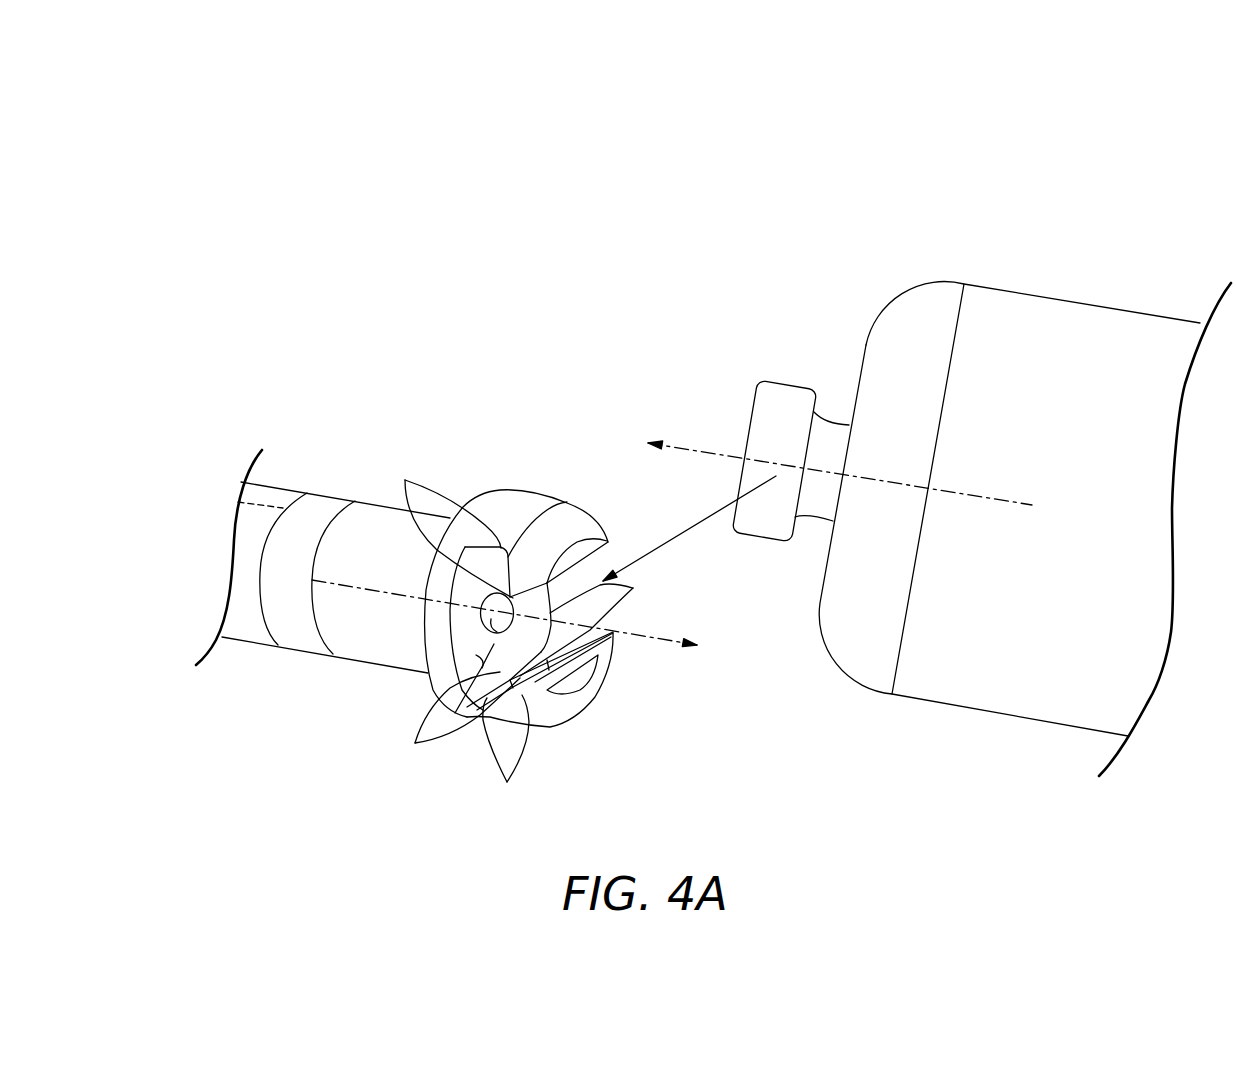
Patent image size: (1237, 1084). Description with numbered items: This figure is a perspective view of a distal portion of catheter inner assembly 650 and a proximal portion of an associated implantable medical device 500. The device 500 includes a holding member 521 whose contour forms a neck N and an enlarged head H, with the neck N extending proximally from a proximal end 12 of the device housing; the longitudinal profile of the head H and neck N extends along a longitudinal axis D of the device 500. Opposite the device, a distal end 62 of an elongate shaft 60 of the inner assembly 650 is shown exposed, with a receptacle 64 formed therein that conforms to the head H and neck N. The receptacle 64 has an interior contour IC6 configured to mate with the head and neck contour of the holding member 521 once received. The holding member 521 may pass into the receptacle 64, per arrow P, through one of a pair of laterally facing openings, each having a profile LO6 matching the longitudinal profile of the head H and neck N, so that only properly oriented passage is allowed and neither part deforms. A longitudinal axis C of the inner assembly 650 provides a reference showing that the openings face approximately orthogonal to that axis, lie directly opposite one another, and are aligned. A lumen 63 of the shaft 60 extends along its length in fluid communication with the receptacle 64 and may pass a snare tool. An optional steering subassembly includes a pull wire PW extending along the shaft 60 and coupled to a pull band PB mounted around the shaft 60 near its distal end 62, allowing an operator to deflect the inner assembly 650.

The implantable medical device 500 is at (970, 150).
The proximal end of device housing 12 is at (897, 360).
The holding member 521 is at (767, 443).
The enlarged head H is at (795, 400).
The neck N is at (817, 507).
The longitudinal axis of device D is at (692, 447).
The arrow indicating passage of holding member P is at (664, 522).
The longitudinal axis of catheter inner assembly C is at (653, 642).
The catheter inner assembly 650 is at (429, 555).
The elongate shaft 60 is at (429, 595).
The pull wire PW is at (253, 500).
The pull band PB is at (278, 620).
The receptacle 64 is at (434, 623).
The lumen 63 is at (433, 663).
The distal end of elongate shaft 62 is at (523, 510).
The profile of laterally facing opening LO6 is at (408, 474).
The interior contour IC6 is at (415, 743).